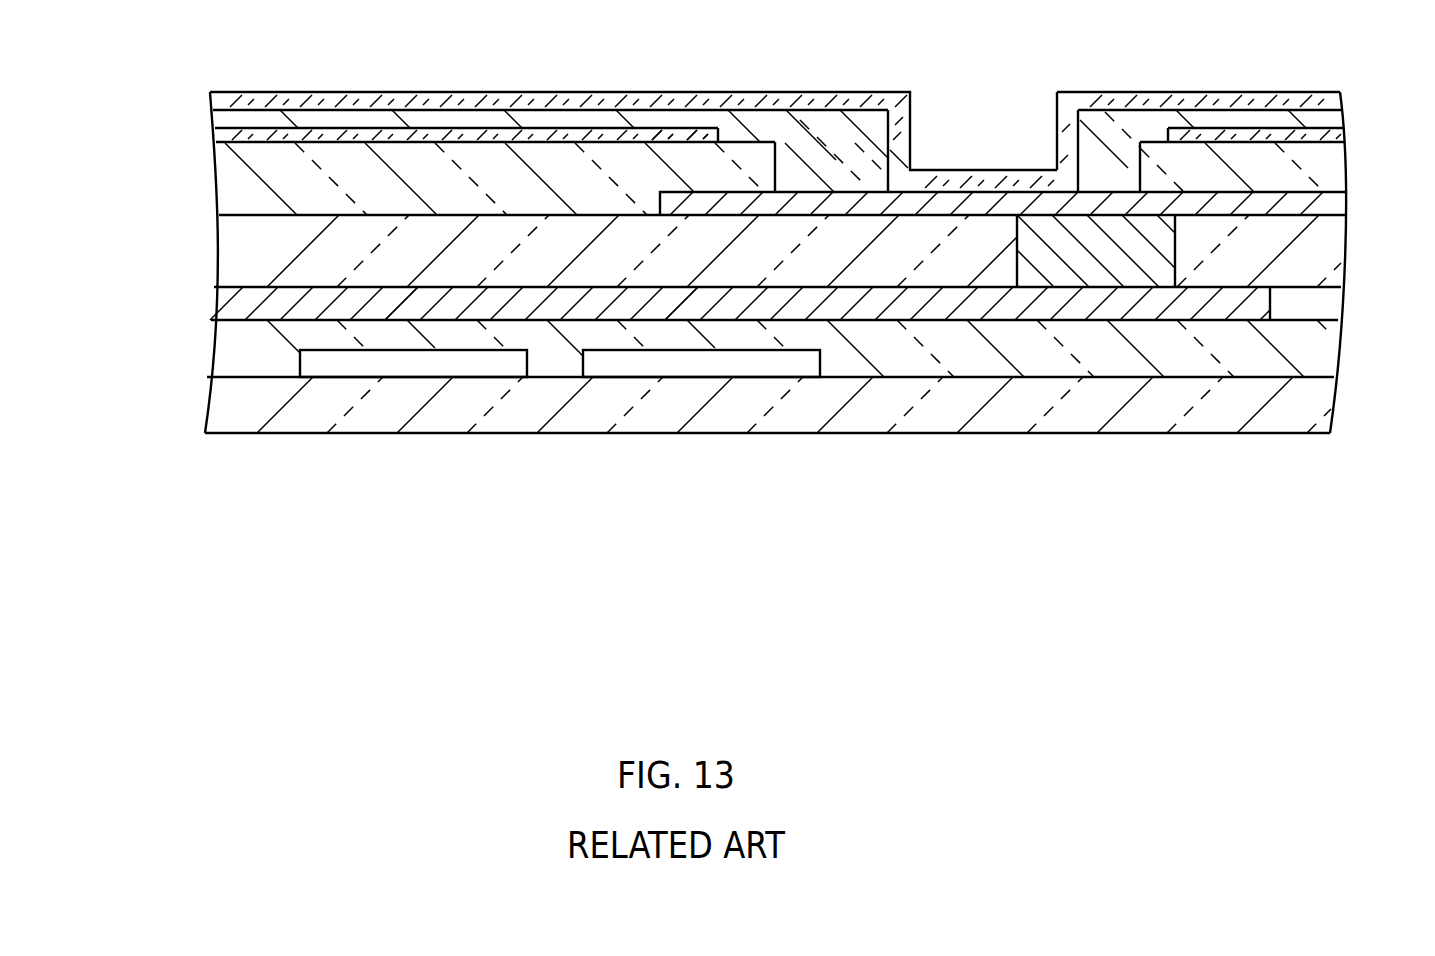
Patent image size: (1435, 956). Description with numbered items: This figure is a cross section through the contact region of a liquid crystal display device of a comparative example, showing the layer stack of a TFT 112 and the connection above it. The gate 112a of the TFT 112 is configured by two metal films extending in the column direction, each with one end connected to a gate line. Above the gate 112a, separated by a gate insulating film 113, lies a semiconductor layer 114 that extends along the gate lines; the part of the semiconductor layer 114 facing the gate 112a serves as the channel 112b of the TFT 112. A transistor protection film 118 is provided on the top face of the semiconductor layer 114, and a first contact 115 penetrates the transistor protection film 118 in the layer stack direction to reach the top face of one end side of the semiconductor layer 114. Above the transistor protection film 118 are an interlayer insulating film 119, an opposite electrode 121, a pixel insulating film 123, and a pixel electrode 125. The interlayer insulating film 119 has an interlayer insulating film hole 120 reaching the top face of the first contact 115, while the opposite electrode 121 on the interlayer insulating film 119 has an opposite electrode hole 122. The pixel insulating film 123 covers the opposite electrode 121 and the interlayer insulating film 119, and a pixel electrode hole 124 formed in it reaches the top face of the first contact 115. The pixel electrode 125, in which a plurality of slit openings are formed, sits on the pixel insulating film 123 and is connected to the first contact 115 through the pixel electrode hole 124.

The TFT 112 is at (525, 383).
The gate 112a is at (438, 364).
The channel 112b is at (383, 305).
The gate insulating film 113 is at (212, 352).
The semiconductor layer 114 is at (212, 302).
The first contact 115 is at (1016, 247).
The transistor protection film 118 is at (216, 253).
The interlayer insulating film 119 is at (227, 178).
The interlayer insulating film hole 120 is at (790, 160).
The opposite electrode 121 is at (217, 130).
The opposite electrode hole 122 is at (718, 135).
The pixel insulating film 123 is at (870, 127).
The pixel electrode hole 124 is at (1064, 140).
The pixel electrode 125 is at (212, 99).